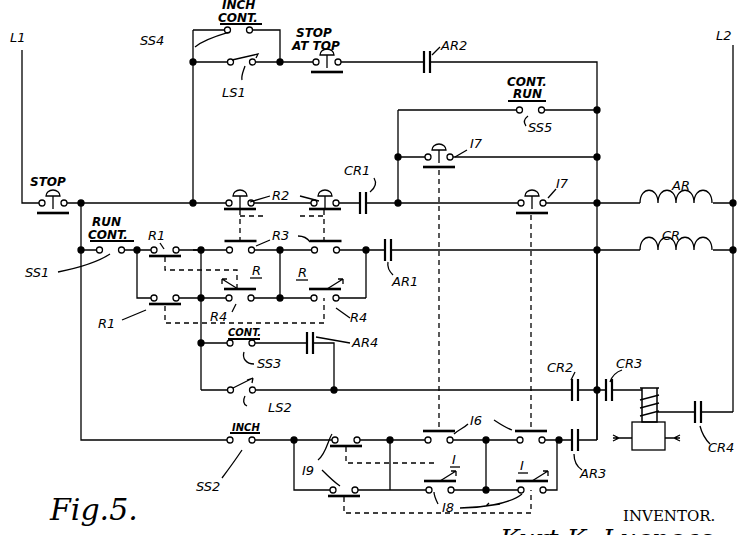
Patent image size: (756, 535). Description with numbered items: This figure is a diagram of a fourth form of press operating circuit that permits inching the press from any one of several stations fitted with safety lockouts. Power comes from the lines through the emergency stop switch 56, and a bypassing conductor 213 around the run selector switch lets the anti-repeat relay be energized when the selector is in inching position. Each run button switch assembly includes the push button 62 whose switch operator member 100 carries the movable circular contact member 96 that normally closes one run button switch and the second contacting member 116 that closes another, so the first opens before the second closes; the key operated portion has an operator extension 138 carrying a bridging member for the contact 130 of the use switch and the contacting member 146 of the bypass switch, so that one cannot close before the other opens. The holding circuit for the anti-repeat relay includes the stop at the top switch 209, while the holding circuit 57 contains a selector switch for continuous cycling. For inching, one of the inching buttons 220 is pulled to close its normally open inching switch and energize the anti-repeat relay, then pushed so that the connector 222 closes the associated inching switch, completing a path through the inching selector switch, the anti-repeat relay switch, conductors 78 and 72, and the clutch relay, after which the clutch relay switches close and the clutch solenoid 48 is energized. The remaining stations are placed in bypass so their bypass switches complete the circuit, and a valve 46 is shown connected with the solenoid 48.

The emergency stop switch 56 is at (52, 214).
The bypassing conductor 213 is at (128, 203).
The movable circular contact member 96 is at (229, 200).
The push button 62 is at (324, 192).
The switch operator member 100 is at (282, 224).
The second movable circular contacting member 116 is at (228, 240).
The contact 130 is at (150, 304).
The operator extension 138 is at (177, 328).
The contacting member 146 is at (254, 305).
The stop at the top switch 209 is at (337, 71).
The inching button 220 is at (437, 144).
The connector 222 is at (530, 304).
The conductor 72 is at (597, 280).
The holding circuit 57 is at (402, 388).
The conductor 78 is at (597, 418).
The clutch solenoid 48 is at (658, 390).
The valve 46 is at (660, 448).